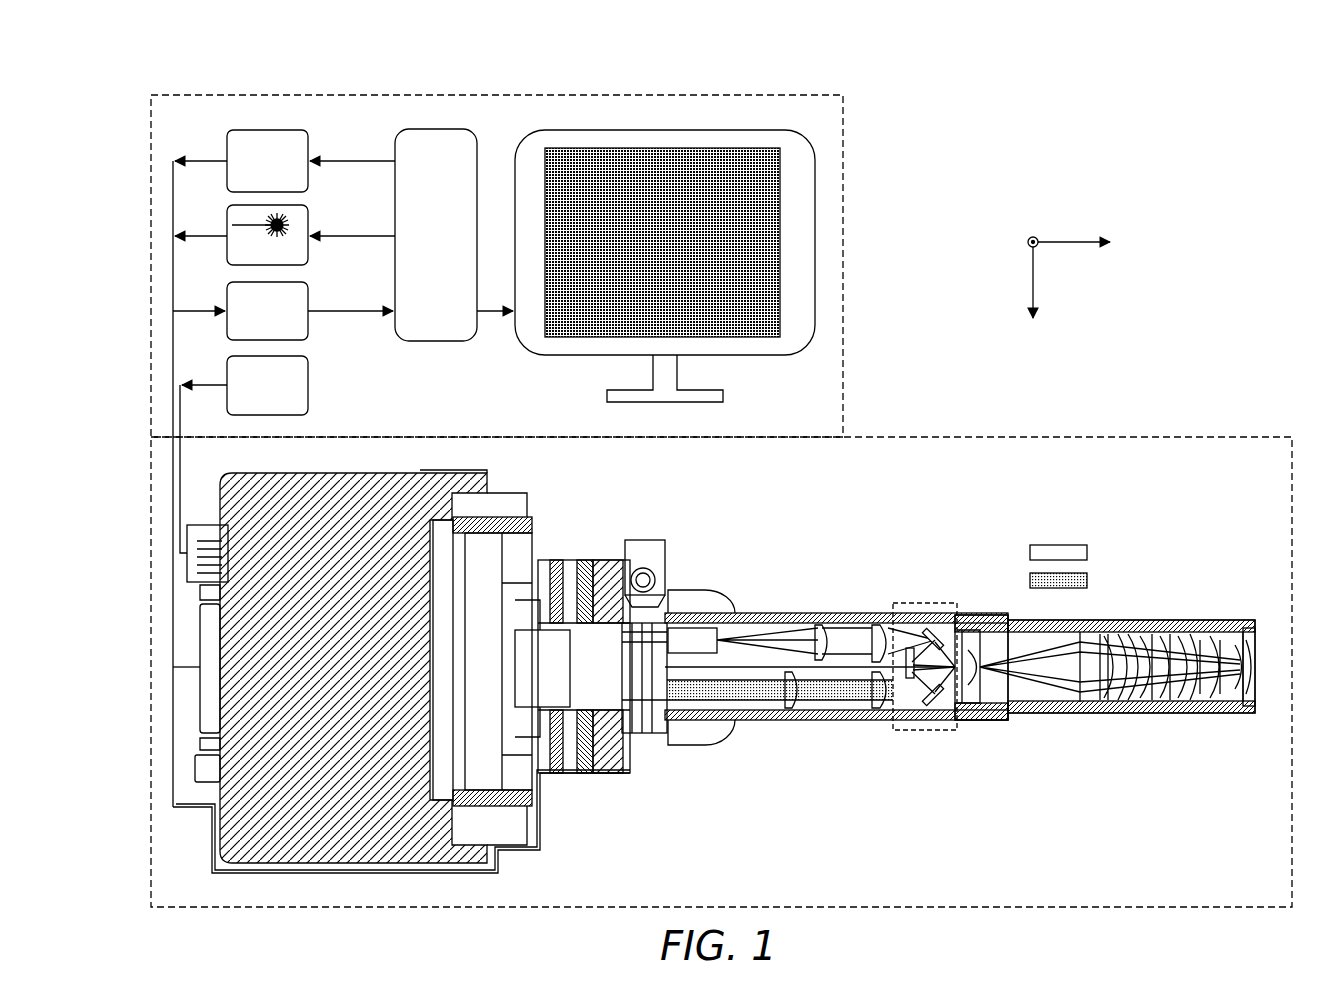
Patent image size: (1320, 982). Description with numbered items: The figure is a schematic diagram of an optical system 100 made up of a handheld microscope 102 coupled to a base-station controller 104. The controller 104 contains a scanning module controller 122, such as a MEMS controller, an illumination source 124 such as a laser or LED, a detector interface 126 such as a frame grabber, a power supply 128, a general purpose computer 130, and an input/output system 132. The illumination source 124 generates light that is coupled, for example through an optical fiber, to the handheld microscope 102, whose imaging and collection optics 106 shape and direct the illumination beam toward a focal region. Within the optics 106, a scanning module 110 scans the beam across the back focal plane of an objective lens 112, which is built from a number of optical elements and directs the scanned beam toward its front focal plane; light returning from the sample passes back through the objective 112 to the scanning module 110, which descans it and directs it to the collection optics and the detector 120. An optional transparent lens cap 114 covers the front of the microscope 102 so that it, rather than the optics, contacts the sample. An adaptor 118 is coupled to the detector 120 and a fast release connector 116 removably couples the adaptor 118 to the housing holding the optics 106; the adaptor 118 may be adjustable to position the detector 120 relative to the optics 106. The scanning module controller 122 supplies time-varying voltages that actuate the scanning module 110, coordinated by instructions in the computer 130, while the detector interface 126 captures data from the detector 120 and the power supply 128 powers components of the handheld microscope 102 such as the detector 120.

The optical system 100 is at (150, 72).
The handheld microscope 102 is at (1212, 435).
The controller 104 is at (767, 95).
The imaging and collection optics 106 is at (960, 717).
The scanning module 110 is at (925, 603).
The objective lens 112 is at (955, 786).
The lens cap 114 is at (1237, 700).
The fast release connector 116 is at (652, 540).
The adaptor 118 is at (613, 778).
The detector 120 is at (323, 873).
The scanning module controller 122 is at (263, 130).
The illumination source 124 is at (248, 205).
The detector interface 126 is at (248, 282).
The power supply 128 is at (248, 356).
The general purpose computer 130 is at (433, 129).
The input/output system 132 is at (581, 130).